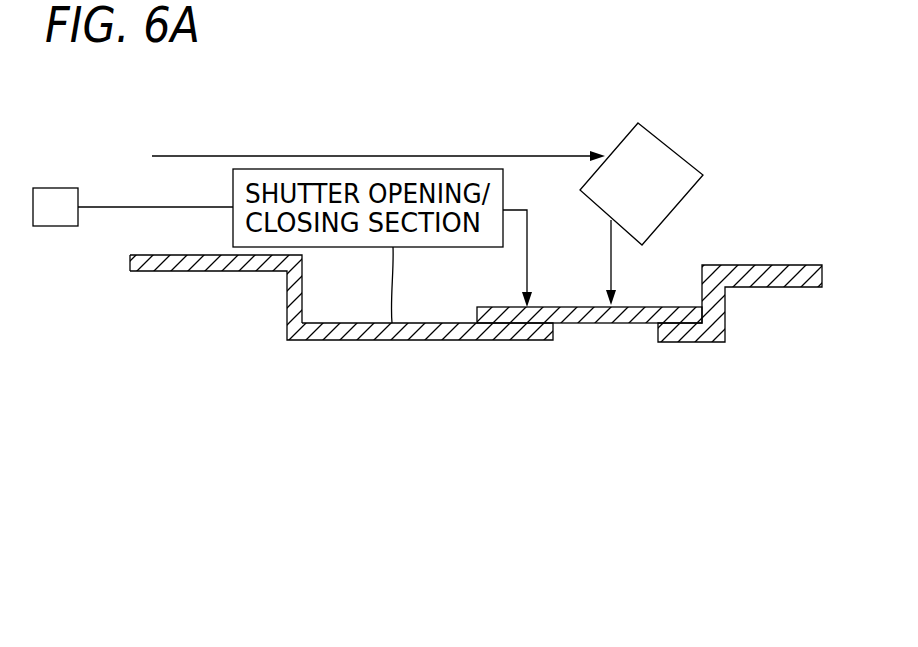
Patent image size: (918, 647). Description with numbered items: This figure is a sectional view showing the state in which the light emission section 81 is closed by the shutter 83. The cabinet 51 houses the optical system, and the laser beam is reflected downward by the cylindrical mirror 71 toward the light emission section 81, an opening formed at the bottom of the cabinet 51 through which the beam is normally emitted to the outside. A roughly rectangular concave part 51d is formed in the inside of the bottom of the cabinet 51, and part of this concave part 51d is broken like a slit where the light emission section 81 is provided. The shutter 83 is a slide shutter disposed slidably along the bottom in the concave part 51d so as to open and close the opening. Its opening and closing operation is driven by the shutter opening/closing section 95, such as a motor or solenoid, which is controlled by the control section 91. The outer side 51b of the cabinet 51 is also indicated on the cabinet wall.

The control section 91 is at (52, 188).
The cylindrical mirror 71 is at (692, 162).
The outer side of the cabinet 51b is at (190, 271).
The concave part 51d is at (325, 340).
The shutter opening/closing section 95 is at (389, 340).
The shutter 83 is at (626, 323).
The light emission section 81 is at (582, 336).
The cabinet 51 is at (768, 288).